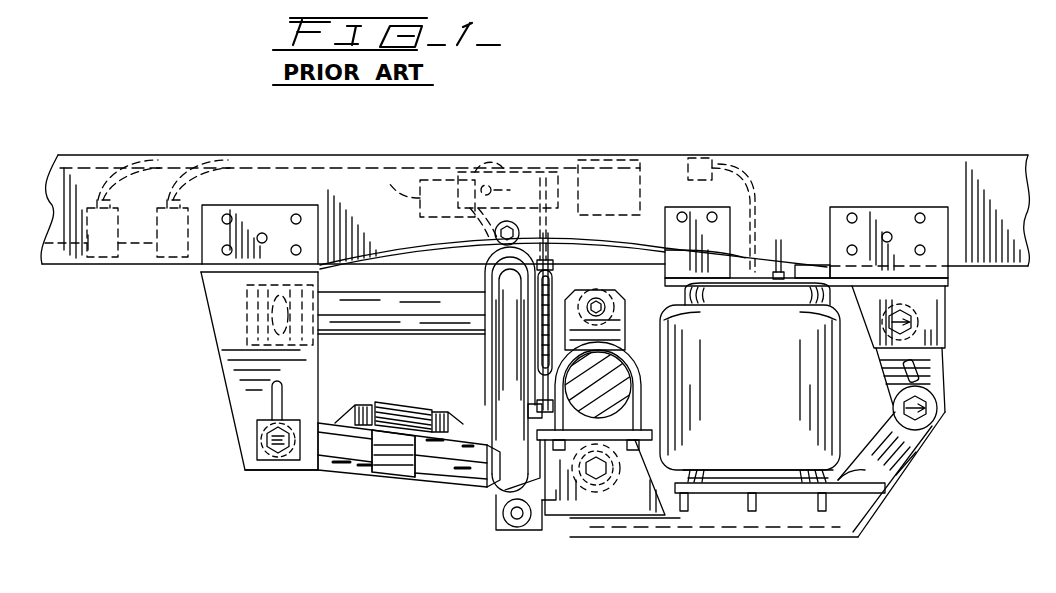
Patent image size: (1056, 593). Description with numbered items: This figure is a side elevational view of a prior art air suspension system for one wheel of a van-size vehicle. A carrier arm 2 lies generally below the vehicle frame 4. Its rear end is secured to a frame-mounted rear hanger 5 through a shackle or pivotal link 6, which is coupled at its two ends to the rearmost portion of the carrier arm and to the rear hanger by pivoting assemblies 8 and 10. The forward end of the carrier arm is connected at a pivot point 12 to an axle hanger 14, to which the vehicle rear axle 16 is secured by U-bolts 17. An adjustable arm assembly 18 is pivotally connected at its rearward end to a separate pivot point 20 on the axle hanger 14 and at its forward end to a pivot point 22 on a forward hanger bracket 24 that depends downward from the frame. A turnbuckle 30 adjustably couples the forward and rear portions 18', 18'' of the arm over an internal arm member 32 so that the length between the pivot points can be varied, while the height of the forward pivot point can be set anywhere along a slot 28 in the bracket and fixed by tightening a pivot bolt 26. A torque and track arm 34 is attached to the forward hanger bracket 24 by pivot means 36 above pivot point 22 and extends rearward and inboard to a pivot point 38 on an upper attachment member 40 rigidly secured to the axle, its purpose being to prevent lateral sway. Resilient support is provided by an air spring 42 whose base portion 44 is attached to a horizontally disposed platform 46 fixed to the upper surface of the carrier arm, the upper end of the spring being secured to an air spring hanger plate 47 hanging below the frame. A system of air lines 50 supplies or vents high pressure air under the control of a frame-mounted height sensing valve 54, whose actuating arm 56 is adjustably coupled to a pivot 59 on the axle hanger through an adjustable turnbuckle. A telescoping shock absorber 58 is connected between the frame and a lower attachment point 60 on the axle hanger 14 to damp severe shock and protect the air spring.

The carrier arm 2 is at (702, 538).
The vehicle frame 4 is at (993, 262).
The rear hanger 5 is at (930, 295).
The shackle or pivotal link 6 is at (922, 372).
The pivoting assembly 8 is at (915, 327).
The pivoting assembly 10 is at (938, 414).
The pivot point 12 is at (598, 478).
The axle hanger 14 is at (548, 500).
The rear axle 16 is at (598, 355).
The U-bolts 17 is at (636, 412).
The adjustable arm assembly 18 is at (402, 484).
The forward portion of the adjustment arm assembly 18' is at (336, 474).
The rear portion of the adjustment arm assembly 18'' is at (447, 490).
The pivot point 20 is at (494, 488).
The pivot point 22 is at (245, 473).
The forward hanger bracket 24 is at (222, 388).
The pivot bolt 26 is at (262, 440).
The slot 28 is at (283, 395).
The turnbuckle 30 is at (408, 406).
The internal arm member 32 is at (395, 472).
The torque and track arm 34 is at (375, 295).
The pivot means 36 is at (247, 285).
The pivot point 38 is at (596, 298).
The upper attachment member 40 is at (632, 292).
The air spring 42 is at (822, 414).
The base portion 44 is at (684, 483).
The platform 46 is at (900, 480).
The air spring hanger plate 47 is at (778, 270).
The air lines 50 is at (108, 190).
The height sensing valve 54 is at (383, 182).
The actuating arm 56 is at (526, 172).
The shock absorber 58 is at (553, 272).
The pivot 59 is at (533, 413).
The lower attachment point 60 is at (517, 522).